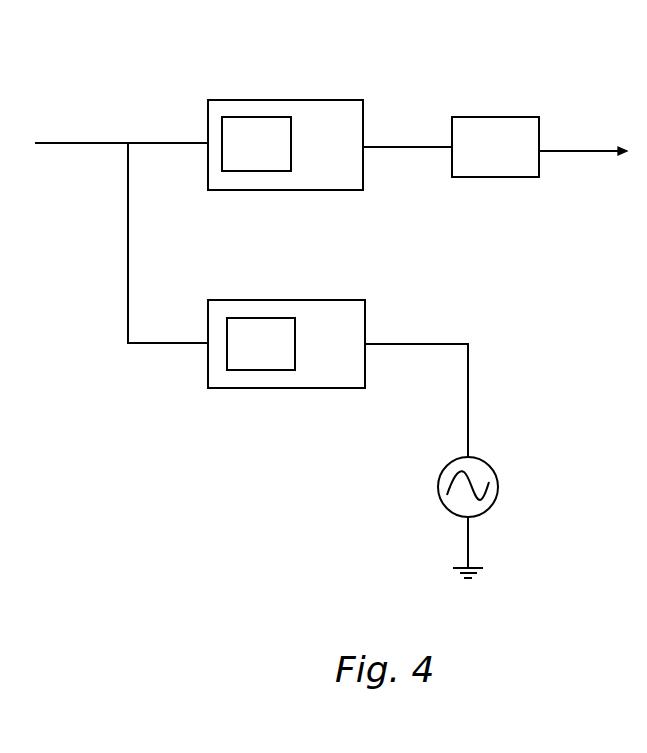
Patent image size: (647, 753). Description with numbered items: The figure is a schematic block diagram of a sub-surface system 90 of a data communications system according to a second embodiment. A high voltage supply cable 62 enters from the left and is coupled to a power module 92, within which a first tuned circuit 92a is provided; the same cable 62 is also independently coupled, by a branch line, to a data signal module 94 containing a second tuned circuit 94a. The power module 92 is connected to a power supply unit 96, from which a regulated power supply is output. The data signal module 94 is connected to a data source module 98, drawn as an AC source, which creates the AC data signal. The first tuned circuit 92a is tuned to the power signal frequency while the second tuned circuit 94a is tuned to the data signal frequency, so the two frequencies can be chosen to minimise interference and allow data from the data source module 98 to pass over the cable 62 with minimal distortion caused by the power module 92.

The high voltage supply cable 62 is at (106, 142).
The sub-surface system 90 is at (456, 82).
The power module 92 is at (320, 100).
The first tuned circuit 92a is at (240, 117).
The data signal module 94 is at (292, 300).
The second tuned circuit 94a is at (250, 370).
The power supply unit 96 is at (502, 117).
The data source module 98 is at (490, 463).